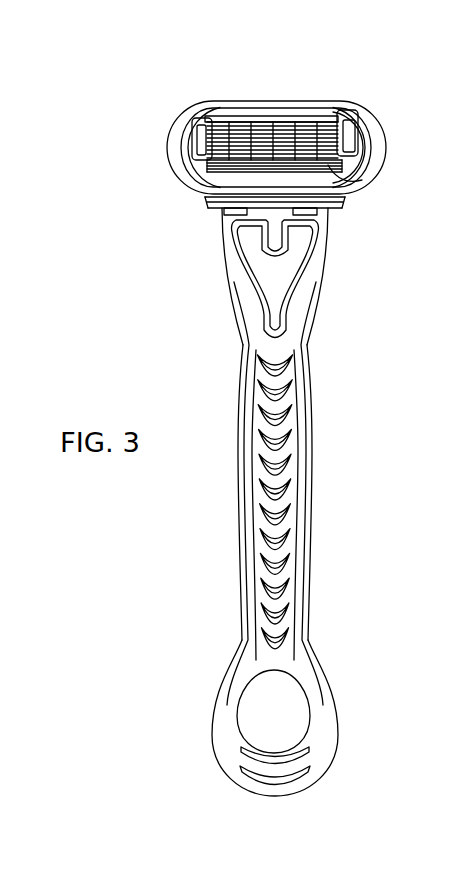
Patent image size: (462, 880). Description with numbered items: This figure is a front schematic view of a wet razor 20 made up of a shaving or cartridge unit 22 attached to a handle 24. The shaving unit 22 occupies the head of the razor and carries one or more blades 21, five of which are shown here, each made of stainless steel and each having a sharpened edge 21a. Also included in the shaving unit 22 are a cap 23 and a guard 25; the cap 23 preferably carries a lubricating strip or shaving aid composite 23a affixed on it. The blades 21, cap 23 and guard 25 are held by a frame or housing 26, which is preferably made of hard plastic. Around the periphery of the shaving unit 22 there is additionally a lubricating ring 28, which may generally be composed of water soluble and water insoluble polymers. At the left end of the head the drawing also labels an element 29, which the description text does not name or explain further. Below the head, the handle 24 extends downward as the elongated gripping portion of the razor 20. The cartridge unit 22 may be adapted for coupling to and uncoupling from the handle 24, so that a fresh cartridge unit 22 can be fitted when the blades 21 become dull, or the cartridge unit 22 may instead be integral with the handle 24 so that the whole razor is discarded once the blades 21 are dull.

The wet razor 20 is at (153, 66).
The blades 21 is at (310, 119).
The sharpened edge 21a is at (233, 121).
The shaving unit 22 is at (383, 156).
The cap 23 is at (294, 121).
The lubricating strip 23a is at (272, 92).
The handle 24 is at (309, 502).
The guard 25 is at (368, 190).
The housing 26 is at (384, 168).
The lubricating ring 28 is at (334, 200).
The end cap 29 is at (190, 141).